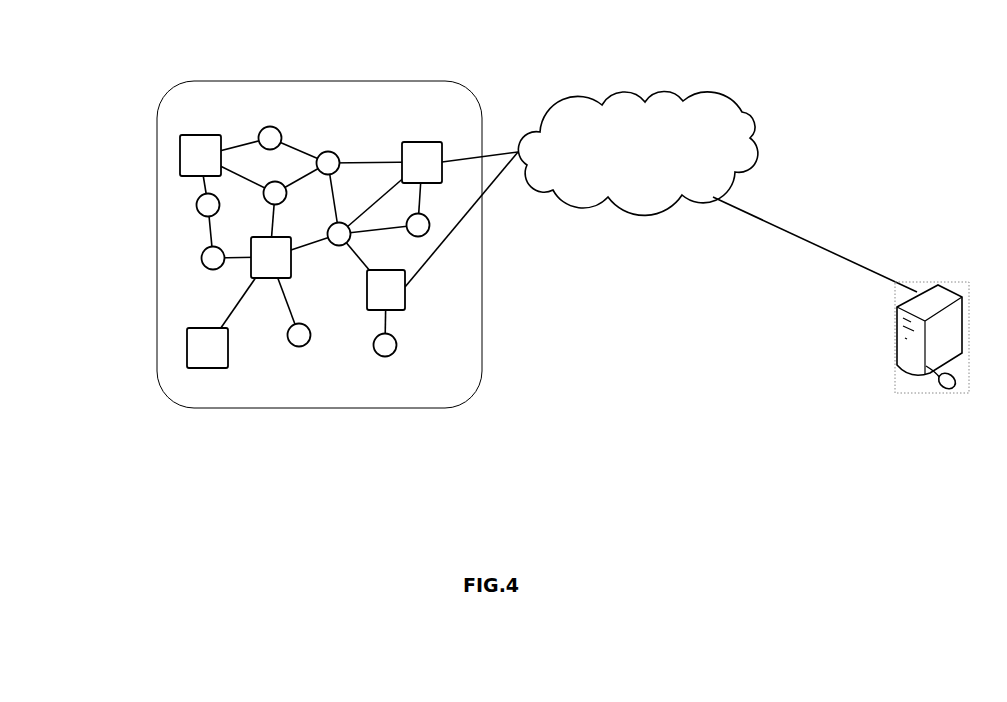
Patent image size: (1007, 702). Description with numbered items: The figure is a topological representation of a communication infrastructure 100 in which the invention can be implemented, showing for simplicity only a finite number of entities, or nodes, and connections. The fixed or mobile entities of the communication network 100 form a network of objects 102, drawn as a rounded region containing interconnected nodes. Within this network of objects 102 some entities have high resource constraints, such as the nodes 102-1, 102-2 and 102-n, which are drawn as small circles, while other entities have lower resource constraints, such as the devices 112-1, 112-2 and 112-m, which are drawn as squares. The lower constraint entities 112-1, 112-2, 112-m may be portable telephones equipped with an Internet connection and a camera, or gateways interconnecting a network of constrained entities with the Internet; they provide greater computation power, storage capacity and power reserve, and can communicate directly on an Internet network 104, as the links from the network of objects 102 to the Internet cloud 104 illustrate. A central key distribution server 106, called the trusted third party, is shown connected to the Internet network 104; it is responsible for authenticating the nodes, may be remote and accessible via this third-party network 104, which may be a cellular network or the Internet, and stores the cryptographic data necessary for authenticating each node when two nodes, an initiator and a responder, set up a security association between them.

The communication infrastructure 100 is at (523, 259).
The network of objects 102 is at (297, 219).
The high resource constraint entity 102-1 is at (195, 262).
The network node 102-2 is at (187, 207).
The high resource constraint entity 102-n is at (403, 358).
The lower resource constraint entity 112-1 is at (183, 350).
The network device 112-2 is at (168, 157).
The lower resource constraint entity 112-m is at (430, 132).
The Internet network 104 is at (757, 107).
The central key distribution server 106 is at (893, 342).